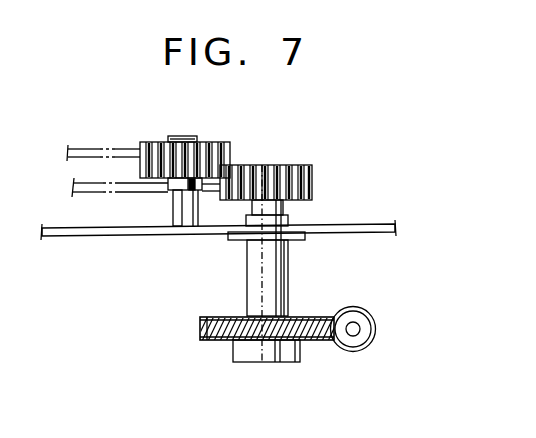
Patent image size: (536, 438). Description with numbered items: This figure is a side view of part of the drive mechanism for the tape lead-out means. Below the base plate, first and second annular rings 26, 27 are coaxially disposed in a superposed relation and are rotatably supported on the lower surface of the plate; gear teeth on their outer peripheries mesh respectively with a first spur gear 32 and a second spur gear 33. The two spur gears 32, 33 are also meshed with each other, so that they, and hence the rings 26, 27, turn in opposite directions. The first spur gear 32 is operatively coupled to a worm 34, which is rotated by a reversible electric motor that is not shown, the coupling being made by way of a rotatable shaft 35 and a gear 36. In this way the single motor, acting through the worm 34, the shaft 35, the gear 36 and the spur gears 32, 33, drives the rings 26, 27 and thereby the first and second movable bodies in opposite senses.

The first annular ring 26 is at (102, 188).
The second annular ring 27 is at (119, 156).
The first spur gear 32 is at (312, 181).
The second spur gear 33 is at (221, 146).
The worm 34 is at (371, 325).
The rotatable shaft 35 is at (260, 273).
The gear 36 is at (200, 328).